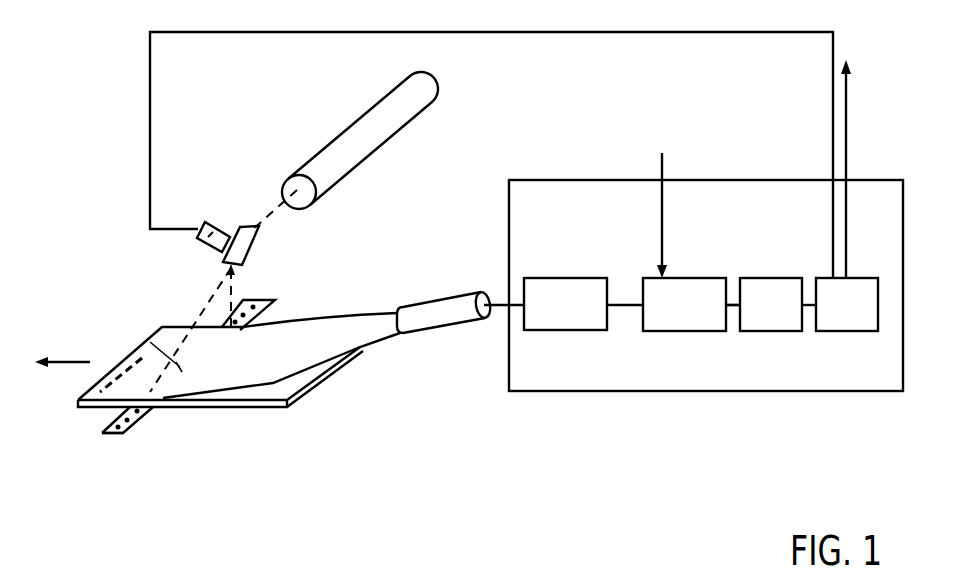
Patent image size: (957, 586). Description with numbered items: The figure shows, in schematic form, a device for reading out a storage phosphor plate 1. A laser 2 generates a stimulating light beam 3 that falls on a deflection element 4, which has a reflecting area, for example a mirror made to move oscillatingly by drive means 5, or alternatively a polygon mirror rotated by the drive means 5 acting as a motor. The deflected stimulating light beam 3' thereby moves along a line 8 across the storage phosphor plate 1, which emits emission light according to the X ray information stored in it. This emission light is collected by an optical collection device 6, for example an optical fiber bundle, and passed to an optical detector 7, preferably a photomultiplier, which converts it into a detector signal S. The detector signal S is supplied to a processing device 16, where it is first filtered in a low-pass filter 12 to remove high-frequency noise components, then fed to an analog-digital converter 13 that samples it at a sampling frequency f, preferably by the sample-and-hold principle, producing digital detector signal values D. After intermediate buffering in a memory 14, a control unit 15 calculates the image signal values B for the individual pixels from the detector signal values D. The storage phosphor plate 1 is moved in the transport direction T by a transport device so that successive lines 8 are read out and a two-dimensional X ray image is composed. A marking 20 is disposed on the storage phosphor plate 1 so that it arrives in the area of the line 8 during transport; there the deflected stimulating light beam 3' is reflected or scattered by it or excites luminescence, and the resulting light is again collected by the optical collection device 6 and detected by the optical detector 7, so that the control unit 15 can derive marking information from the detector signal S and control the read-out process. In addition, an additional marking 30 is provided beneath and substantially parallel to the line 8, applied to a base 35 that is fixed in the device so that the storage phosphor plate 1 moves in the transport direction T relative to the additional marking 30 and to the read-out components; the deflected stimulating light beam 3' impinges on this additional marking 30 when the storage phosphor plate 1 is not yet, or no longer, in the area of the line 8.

The storage phosphor plate 1 is at (78, 402).
The laser 2 is at (345, 135).
The stimulating light beam 3 is at (260, 202).
The deflected stimulating light beam 3' is at (191, 328).
The deflection element 4 is at (231, 236).
The drive means 5 is at (208, 236).
The optical collection device 6 is at (310, 322).
The optical detector 7 is at (437, 305).
The line 8 is at (150, 342).
The low-pass filter 12 is at (545, 283).
The analog-digital converter 13 is at (677, 282).
The memory 14 is at (758, 283).
The control unit 15 is at (858, 282).
The processing device 16 is at (540, 185).
The marking 20 is at (95, 402).
The additional marking 30 is at (124, 433).
The base 35 is at (115, 433).
The transport direction T is at (65, 362).
The detector signal S is at (495, 300).
The sampling frequency f is at (657, 201).
The image signal values B is at (863, 168).
The detector signal values D is at (733, 307).